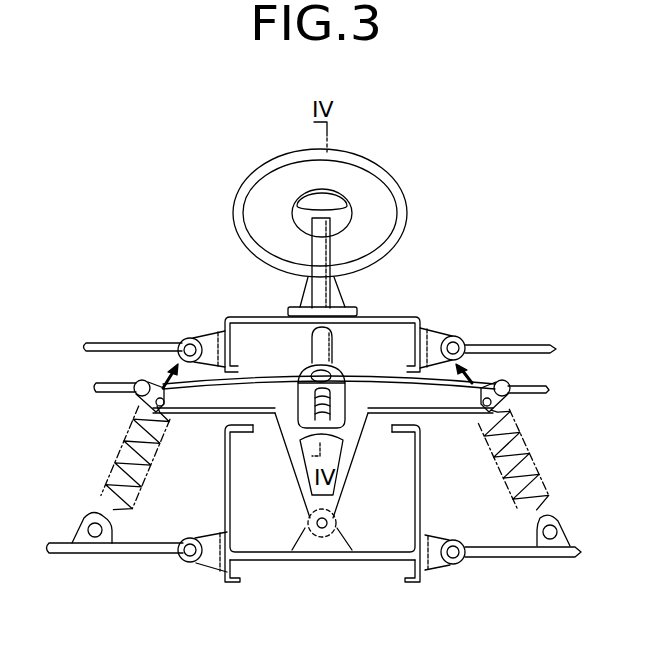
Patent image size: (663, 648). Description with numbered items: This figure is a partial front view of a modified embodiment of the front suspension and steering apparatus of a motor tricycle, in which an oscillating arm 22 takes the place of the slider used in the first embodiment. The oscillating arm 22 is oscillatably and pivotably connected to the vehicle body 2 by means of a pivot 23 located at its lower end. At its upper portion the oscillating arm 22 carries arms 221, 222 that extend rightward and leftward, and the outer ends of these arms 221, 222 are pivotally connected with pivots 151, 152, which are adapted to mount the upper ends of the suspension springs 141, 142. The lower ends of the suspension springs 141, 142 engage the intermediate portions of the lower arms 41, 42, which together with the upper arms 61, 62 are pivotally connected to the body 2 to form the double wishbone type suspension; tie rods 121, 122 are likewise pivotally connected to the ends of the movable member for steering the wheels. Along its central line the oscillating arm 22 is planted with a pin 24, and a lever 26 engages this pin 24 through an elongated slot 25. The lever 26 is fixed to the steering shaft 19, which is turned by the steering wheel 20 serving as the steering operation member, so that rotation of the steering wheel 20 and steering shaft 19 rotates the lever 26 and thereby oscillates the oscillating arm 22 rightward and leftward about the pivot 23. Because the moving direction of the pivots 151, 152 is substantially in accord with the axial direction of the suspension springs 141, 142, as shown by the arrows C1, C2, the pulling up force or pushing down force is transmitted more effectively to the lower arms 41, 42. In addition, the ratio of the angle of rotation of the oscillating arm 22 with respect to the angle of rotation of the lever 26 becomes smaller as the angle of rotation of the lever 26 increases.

The body 2 is at (235, 317).
The steering shaft 19 is at (330, 287).
The steering wheel 20 is at (405, 226).
The oscillating arm 22 is at (355, 438).
The arm 221 is at (445, 414).
The arm 222 is at (197, 414).
The pivot 23 is at (330, 522).
The pin 24 is at (317, 410).
The elongated slot 25 is at (298, 380).
The lever 26 is at (340, 382).
The lower arm 41 is at (500, 558).
The lower arm 42 is at (142, 557).
The upper arm 61 is at (507, 343).
The upper arm 62 is at (147, 342).
The tie rod 121 is at (538, 398).
The tie rod 122 is at (105, 392).
The suspension spring 141 is at (500, 486).
The suspension spring 142 is at (140, 481).
The pivot 151 is at (505, 380).
The pivot 152 is at (142, 378).
The arrow C1 is at (477, 372).
The arrow C2 is at (160, 371).